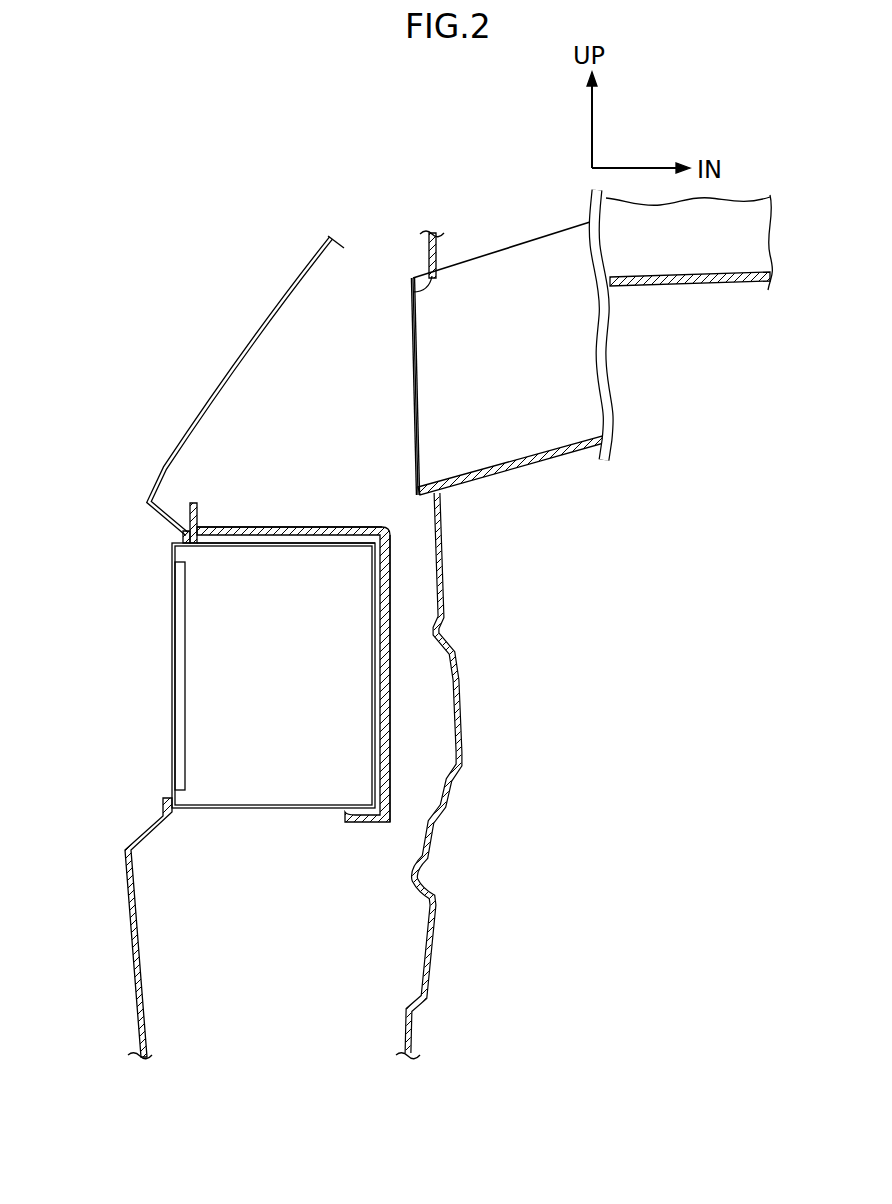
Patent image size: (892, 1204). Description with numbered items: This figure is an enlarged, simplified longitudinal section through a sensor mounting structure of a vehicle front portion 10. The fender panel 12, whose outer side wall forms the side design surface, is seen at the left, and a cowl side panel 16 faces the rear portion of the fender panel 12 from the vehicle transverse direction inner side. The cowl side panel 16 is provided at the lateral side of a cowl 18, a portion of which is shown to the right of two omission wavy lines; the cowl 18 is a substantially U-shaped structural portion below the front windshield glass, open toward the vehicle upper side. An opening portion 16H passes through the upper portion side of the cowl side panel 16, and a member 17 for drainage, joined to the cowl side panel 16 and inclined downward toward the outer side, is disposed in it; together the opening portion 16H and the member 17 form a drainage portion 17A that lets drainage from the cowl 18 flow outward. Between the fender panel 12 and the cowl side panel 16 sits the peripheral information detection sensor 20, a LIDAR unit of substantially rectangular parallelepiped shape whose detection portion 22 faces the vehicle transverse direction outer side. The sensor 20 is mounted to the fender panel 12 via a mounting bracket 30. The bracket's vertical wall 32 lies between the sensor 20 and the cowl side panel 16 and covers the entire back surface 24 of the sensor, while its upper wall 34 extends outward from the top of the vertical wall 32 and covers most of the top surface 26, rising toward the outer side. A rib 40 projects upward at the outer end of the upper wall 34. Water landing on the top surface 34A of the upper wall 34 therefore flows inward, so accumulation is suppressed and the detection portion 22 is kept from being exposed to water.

The vehicle front portion 10 is at (150, 187).
The fender panel 12 is at (192, 388).
The cowl side panel 16 is at (449, 570).
The opening portion 16H is at (431, 283).
The member for drainage 17 is at (532, 470).
The drainage portion 17A is at (403, 457).
The cowl 18 is at (737, 294).
The peripheral information detection sensor 20 is at (284, 814).
The detection portion 22 is at (172, 660).
The back surface 24 is at (377, 647).
The top surface 26 is at (290, 542).
The mounting bracket 30 is at (405, 726).
The vertical wall 32 is at (394, 671).
The upper wall 34 is at (266, 521).
The top surface of the upper wall 34A is at (322, 524).
The rib 40 is at (200, 511).